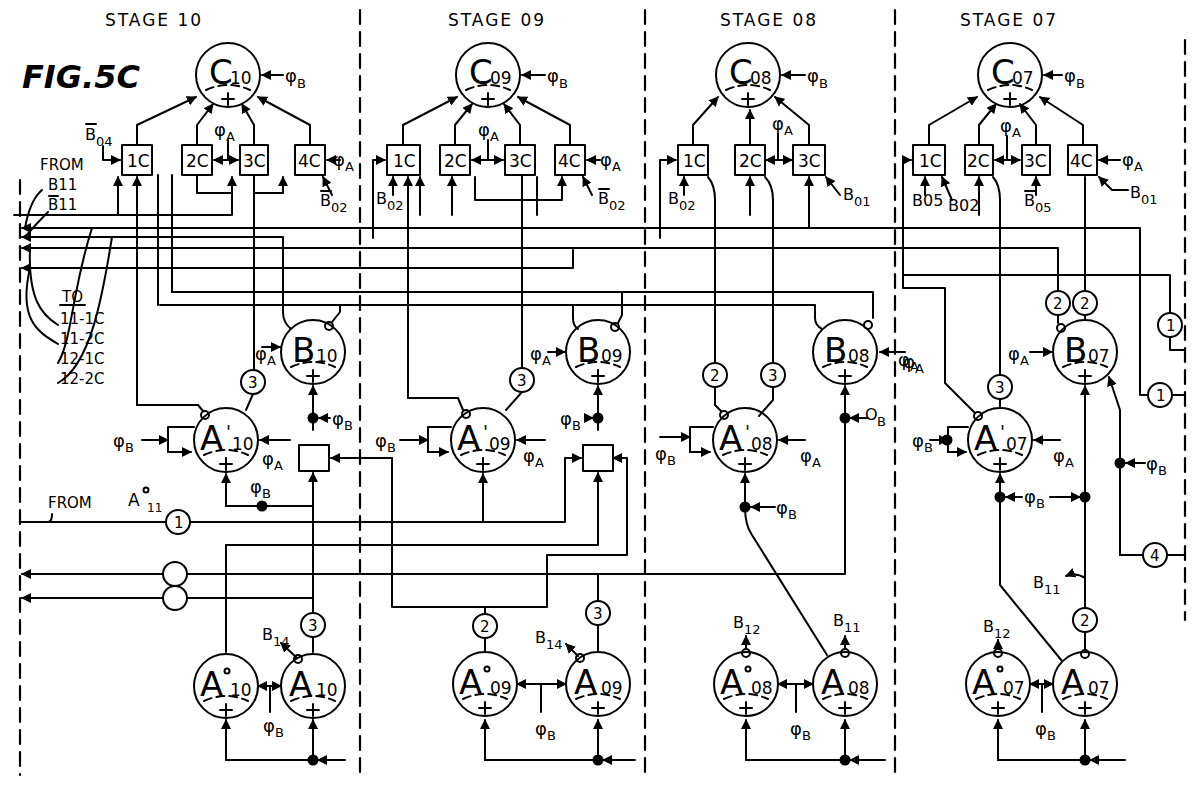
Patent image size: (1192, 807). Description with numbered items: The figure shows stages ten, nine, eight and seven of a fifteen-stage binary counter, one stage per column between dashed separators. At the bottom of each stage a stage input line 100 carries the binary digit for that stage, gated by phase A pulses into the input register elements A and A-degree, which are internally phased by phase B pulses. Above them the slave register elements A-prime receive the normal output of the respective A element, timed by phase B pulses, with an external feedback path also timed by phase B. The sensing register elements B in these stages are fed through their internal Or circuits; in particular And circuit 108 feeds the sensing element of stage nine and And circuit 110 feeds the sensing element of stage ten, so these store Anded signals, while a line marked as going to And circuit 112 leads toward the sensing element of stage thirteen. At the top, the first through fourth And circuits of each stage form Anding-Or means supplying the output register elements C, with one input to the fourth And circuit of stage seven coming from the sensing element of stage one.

The stage input line 100 is at (313, 776).
The And circuit 108 is at (606, 444).
The And circuit 110 is at (326, 472).
The And circuit 112 is at (60, 600).